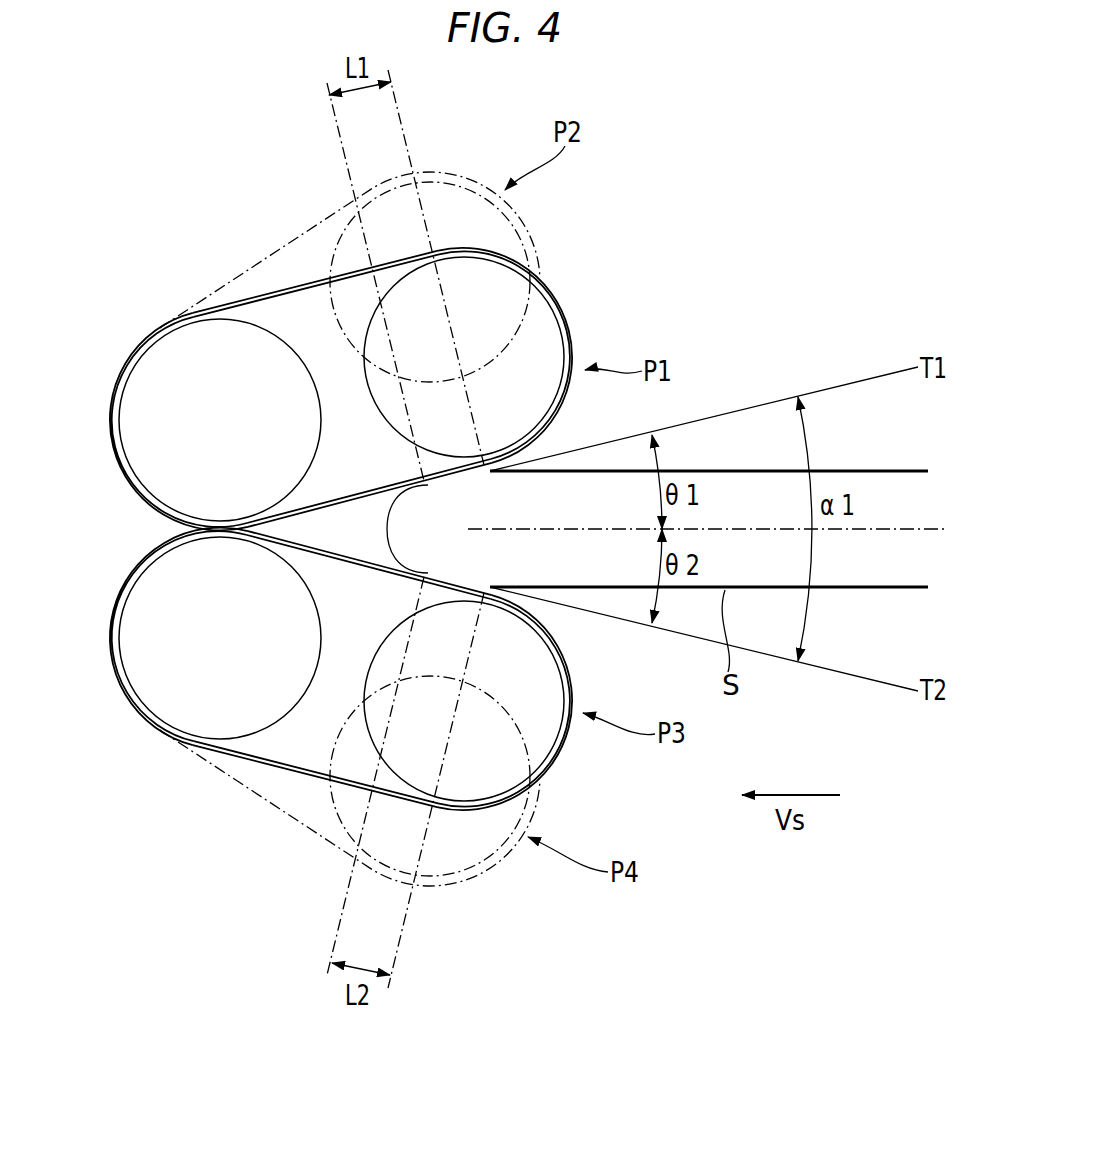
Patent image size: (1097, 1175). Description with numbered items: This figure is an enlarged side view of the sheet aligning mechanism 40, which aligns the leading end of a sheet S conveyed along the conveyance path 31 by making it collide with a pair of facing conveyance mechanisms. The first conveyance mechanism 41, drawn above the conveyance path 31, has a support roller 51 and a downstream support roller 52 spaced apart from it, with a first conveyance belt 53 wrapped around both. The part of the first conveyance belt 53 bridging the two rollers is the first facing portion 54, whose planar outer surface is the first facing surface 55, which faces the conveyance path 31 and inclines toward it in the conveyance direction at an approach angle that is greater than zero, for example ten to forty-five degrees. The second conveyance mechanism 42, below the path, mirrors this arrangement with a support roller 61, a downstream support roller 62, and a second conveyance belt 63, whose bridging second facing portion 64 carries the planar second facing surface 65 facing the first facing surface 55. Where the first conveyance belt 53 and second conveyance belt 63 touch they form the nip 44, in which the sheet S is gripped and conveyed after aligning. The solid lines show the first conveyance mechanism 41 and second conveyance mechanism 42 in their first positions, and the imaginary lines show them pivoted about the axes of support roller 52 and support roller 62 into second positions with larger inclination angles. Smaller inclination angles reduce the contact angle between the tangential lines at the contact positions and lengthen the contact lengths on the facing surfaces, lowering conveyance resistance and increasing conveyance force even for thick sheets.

The conveyance path 31 is at (875, 530).
The sheet aligning mechanism 40 is at (373, 308).
The first conveyance mechanism 41 is at (456, 168).
The second conveyance mechanism 42 is at (567, 758).
The nip 44 is at (217, 532).
The support roller 51 is at (374, 367).
The support roller 52 is at (137, 433).
The first conveyance belt 53 is at (300, 288).
The first facing portion 54 is at (330, 497).
The first facing surface 55 is at (362, 512).
The support roller 61 is at (377, 699).
The support roller 62 is at (137, 638).
The second conveyance belt 63 is at (290, 767).
The second facing portion 64 is at (330, 562).
The second facing surface 65 is at (362, 556).